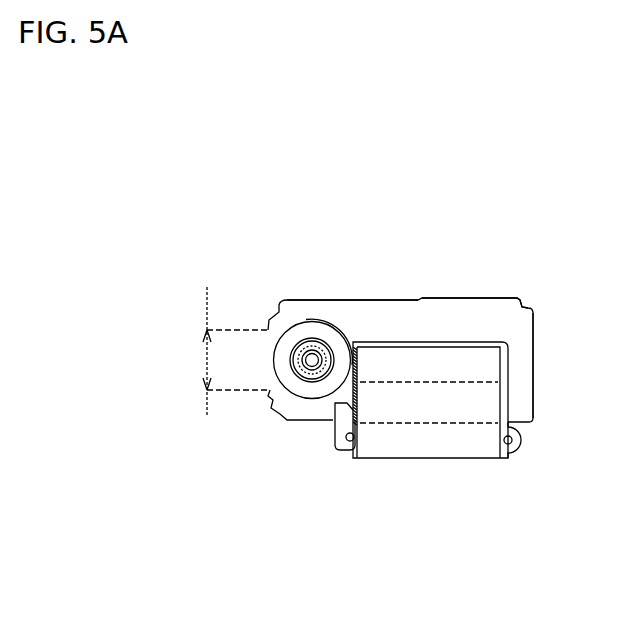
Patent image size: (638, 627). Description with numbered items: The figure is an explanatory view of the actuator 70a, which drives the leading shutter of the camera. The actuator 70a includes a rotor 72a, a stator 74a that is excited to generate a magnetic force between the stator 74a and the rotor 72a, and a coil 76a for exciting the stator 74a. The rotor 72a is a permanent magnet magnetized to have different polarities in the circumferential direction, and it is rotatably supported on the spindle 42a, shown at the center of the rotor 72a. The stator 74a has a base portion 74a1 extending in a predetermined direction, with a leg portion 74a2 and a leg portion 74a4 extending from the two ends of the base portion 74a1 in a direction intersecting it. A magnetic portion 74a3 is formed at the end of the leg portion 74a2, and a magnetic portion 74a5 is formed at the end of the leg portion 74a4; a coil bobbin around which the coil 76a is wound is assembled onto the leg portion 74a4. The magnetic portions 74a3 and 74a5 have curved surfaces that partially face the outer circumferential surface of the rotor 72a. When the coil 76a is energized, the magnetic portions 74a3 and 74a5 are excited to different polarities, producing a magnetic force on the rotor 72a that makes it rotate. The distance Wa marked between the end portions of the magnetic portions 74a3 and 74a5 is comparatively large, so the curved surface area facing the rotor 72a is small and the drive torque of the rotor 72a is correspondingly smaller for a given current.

The actuator 70a is at (370, 220).
The stator 74a is at (451, 297).
The base portion 74a1 is at (518, 380).
The leg portion 74a2 is at (489, 318).
The magnetic portion 74a3 is at (305, 300).
The leg portion 74a4 is at (398, 395).
The magnetic portion 74a5 is at (331, 403).
The spindle 42a is at (306, 345).
The rotor 72a is at (293, 378).
The coil 76a is at (450, 445).
The distance Wa is at (220, 352).